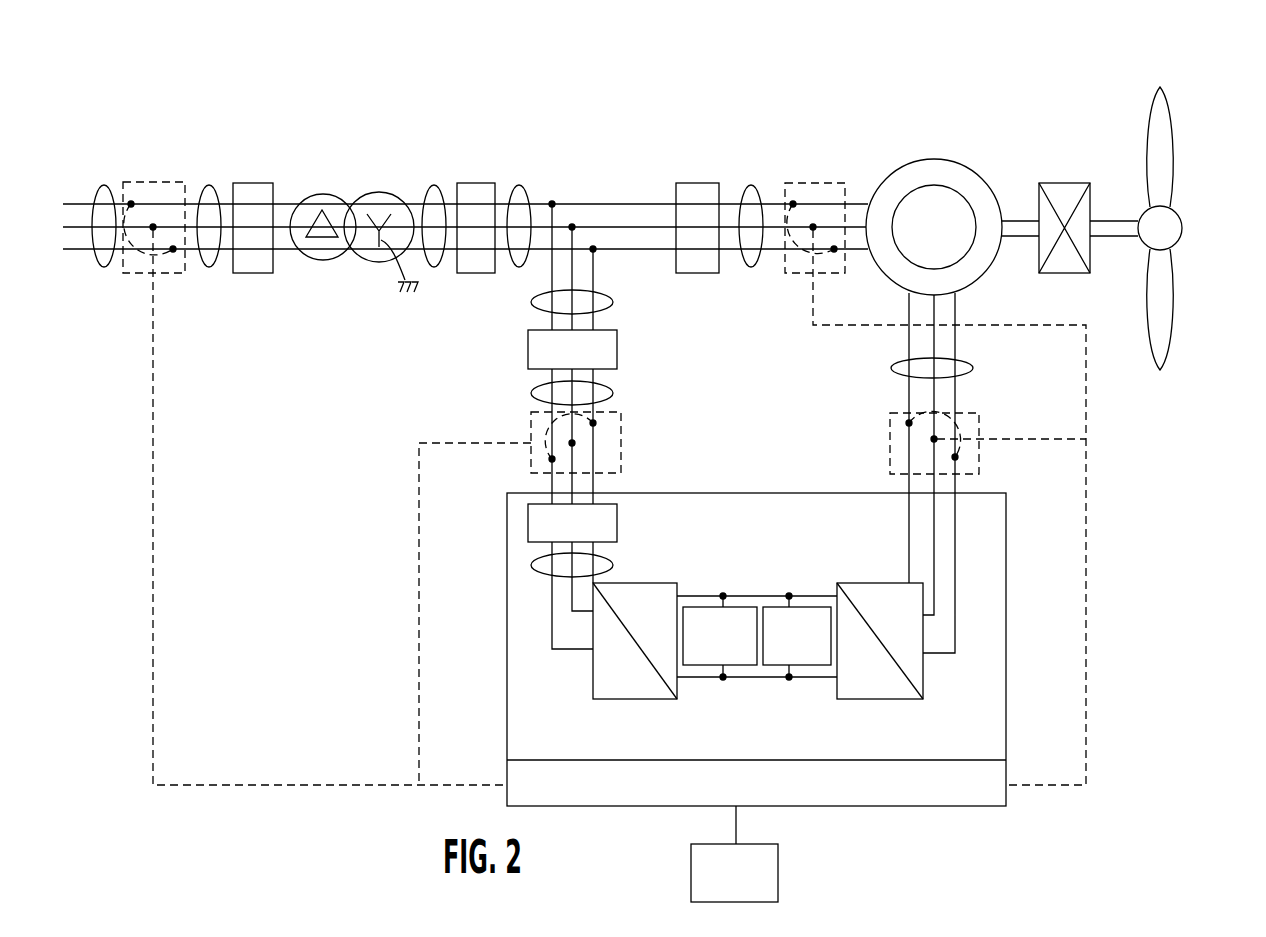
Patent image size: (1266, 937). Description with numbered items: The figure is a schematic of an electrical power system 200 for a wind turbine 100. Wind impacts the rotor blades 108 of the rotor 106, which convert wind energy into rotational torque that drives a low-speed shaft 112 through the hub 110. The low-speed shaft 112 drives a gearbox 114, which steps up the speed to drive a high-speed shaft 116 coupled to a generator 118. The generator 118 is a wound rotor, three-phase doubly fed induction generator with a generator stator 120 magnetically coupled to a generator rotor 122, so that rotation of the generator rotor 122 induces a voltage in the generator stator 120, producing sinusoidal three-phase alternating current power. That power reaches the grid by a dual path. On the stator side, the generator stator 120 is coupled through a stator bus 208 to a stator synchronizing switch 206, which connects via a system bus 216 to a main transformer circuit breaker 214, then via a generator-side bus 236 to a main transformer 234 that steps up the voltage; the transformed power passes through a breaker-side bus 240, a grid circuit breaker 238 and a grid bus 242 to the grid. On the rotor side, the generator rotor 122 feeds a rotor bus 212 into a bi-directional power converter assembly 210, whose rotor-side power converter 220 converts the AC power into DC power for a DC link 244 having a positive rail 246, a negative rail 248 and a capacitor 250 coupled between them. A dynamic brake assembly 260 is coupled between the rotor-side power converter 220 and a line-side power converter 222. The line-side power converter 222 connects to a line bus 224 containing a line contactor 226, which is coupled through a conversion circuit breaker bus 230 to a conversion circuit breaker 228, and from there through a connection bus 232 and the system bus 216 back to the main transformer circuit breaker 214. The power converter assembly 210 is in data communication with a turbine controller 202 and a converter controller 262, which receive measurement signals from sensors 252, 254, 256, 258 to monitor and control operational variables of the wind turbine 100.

The wind turbine 100 is at (1128, 74).
The rotor 106 is at (1190, 190).
The rotor blades 108 is at (1173, 140).
The hub 110 is at (1183, 232).
The low-speed shaft 112 is at (1125, 221).
The gearbox 114 is at (1065, 183).
The high-speed shaft 116 is at (1020, 221).
The generator 118 is at (935, 126).
The generator stator 120 is at (964, 168).
The generator rotor 122 is at (922, 205).
The electrical power system 200 is at (294, 77).
The turbine controller 202 is at (752, 886).
The stator synchronizing switch 206 is at (703, 183).
The stator bus 208 is at (751, 185).
The power converter assembly 210 is at (1006, 581).
The rotor bus 212 is at (974, 368).
The main transformer circuit breaker 214 is at (480, 183).
The system bus 216 is at (520, 185).
The rotor-side power converter 220 is at (878, 704).
The line-side power converter 222 is at (633, 704).
The line bus 224 is at (531, 565).
The line contactor 226 is at (528, 523).
The conversion circuit breaker 228 is at (617, 350).
The conversion circuit breaker bus 230 is at (613, 393).
The connection bus 232 is at (613, 302).
The main transformer 234 is at (383, 192).
The generator-side bus 236 is at (434, 185).
The grid circuit breaker 238 is at (258, 183).
The breaker-side bus 240 is at (209, 185).
The grid bus 242 is at (104, 185).
The DC link 244 is at (736, 557).
The positive rail 246 is at (693, 595).
The negative rail 248 is at (823, 678).
The capacitor 250 is at (695, 665).
The sensor 252 is at (152, 182).
The sensor 254 is at (816, 154).
The sensor 256 is at (886, 444).
The sensor 258 is at (626, 456).
The dynamic brake assembly 260 is at (812, 607).
The converter controller 262 is at (752, 794).